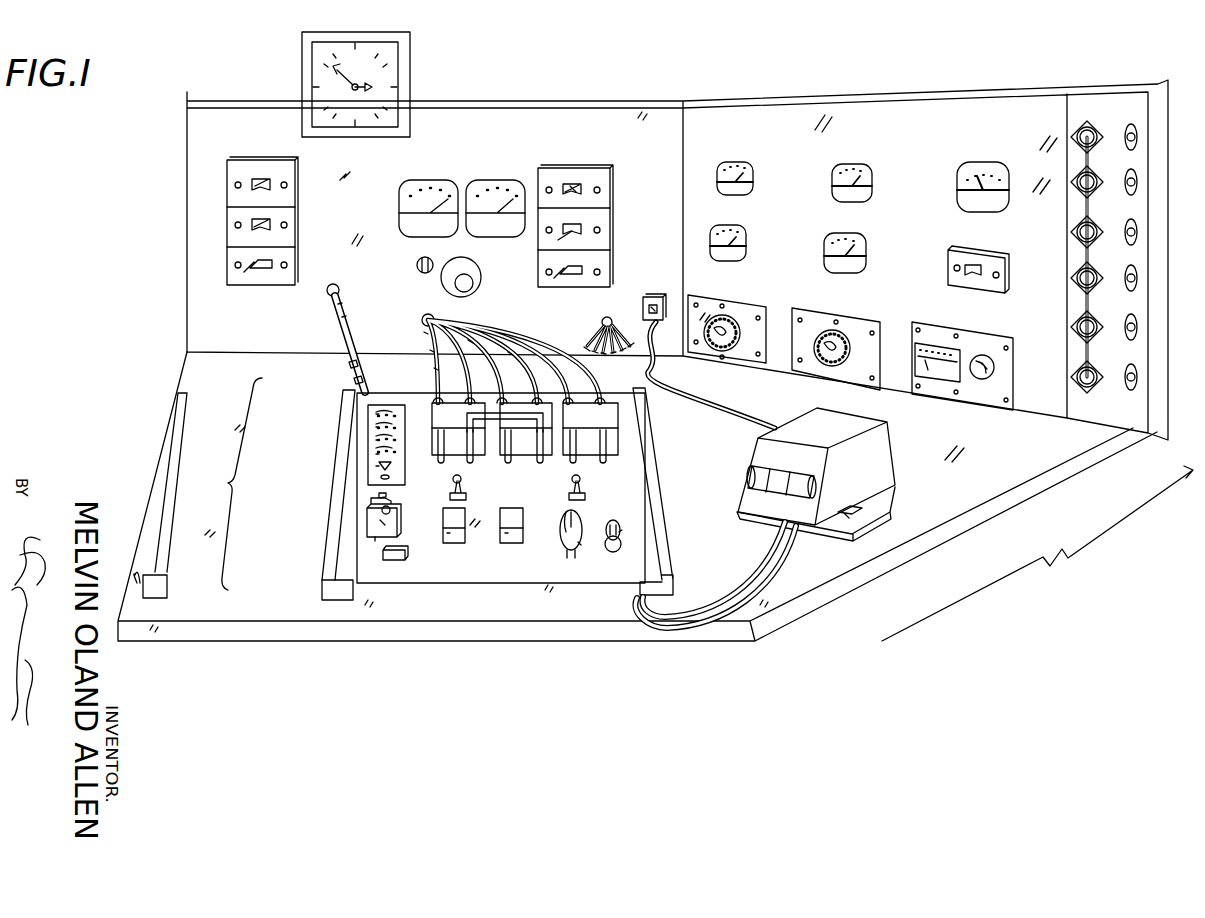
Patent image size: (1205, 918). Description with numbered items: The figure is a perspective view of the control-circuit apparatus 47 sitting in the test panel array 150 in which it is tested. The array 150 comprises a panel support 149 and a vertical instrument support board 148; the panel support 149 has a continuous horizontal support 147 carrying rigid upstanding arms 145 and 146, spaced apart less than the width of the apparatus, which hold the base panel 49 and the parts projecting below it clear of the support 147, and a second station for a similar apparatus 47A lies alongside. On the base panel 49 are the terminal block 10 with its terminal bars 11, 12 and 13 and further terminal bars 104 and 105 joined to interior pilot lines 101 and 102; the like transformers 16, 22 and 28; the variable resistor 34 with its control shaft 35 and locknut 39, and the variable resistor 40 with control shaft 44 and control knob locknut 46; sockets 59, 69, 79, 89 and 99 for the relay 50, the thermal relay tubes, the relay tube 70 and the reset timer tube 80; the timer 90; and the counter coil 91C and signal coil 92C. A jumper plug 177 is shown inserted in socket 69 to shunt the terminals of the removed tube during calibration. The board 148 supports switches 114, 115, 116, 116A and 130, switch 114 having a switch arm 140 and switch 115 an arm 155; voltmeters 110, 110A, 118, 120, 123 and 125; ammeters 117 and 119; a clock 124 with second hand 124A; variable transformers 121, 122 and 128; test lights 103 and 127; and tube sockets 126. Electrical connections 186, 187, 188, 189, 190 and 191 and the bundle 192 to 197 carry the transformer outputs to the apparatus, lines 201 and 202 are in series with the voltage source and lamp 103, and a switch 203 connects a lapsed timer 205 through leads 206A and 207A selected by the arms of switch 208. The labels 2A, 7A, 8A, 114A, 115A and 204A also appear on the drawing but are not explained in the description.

The control panel section 2A is at (234, 484).
The right panel section 7A is at (953, 76).
The center panel section 8A is at (437, 85).
The terminal block 10 is at (414, 403).
The terminal bar 11 is at (376, 414).
The terminal bar 12 is at (376, 427).
The terminal bar 13 is at (376, 440).
The transformer 16 is at (460, 452).
The transformer 22 is at (517, 452).
The transformer 28 is at (620, 416).
The variable potential resistor 34 is at (476, 496).
The control shaft 35 is at (452, 480).
The locknut 39 is at (450, 497).
The variable resistor 40 is at (563, 496).
The control shaft 44 is at (583, 481).
The control knob locknut 46 is at (585, 497).
The apparatus 47 is at (314, 580).
The another apparatus 47A is at (165, 470).
The base panel 49 is at (352, 540).
The relay 50 is at (515, 534).
The socket 59 is at (506, 543).
The socket 69 is at (622, 545).
The relay tube 70 is at (580, 546).
The socket 79 is at (568, 553).
The reset timer tube 80 is at (460, 534).
The socket 89 is at (448, 543).
The timer 90 is at (397, 516).
The coil 91C is at (367, 509).
The coil 92C is at (398, 560).
The socket 99 is at (378, 540).
The interior pilot line 101 is at (349, 367).
The interior pilot line 102 is at (356, 383).
The test light 103 is at (479, 279).
The terminal bar 104 is at (374, 466).
The terminal bar 105 is at (376, 454).
The voltmeter 110 is at (441, 180).
The voltmeter 110A is at (500, 180).
The two-way switch 114 is at (612, 180).
The switch 114A is at (227, 185).
The two-position switch 115 is at (604, 242).
The switch 115A is at (227, 222).
The double pole switch 116 is at (600, 264).
The switch 116A is at (227, 260).
The ammeter 117 is at (752, 180).
The voltmeter 118 is at (745, 243).
The ammeter 119 is at (870, 185).
The voltmeter 120 is at (863, 257).
The variable transformer 121 is at (730, 302).
The variable transformer 122 is at (841, 320).
The voltmeter 123 is at (933, 373).
The clock 124 is at (302, 71).
The second hand 124A is at (368, 63).
The voltmeter 125 is at (992, 170).
The tube socket 126 is at (1138, 137).
The test light 127 is at (1097, 130).
The variable transformer 128 is at (975, 380).
The switch 130 is at (992, 262).
The switch arm 140 is at (578, 182).
The upstanding arm 145 is at (322, 598).
The upstanding arm 146 is at (674, 582).
The horizontal support 147 is at (175, 600).
The instrument support board 148 is at (1178, 352).
The panel support 149 is at (836, 570).
The test panel array 150 is at (1037, 553).
The switch arm 155 is at (560, 242).
The jumper plug 177 is at (622, 531).
The lead 186 is at (426, 332).
The lead 187 is at (432, 350).
The lead 188 is at (436, 368).
The lead 189 is at (512, 352).
The lead 190 is at (472, 340).
The lead 191 is at (455, 325).
The output lead 192 is at (606, 325).
The output lead 197 is at (616, 323).
The line 201 is at (348, 334).
The line 202 is at (332, 314).
The switch 203 is at (652, 297).
The cable 204A is at (668, 375).
The lapsed timer 205 is at (835, 484).
The lead 206A is at (752, 554).
The lead 207A is at (742, 589).
The switch 208 is at (865, 512).